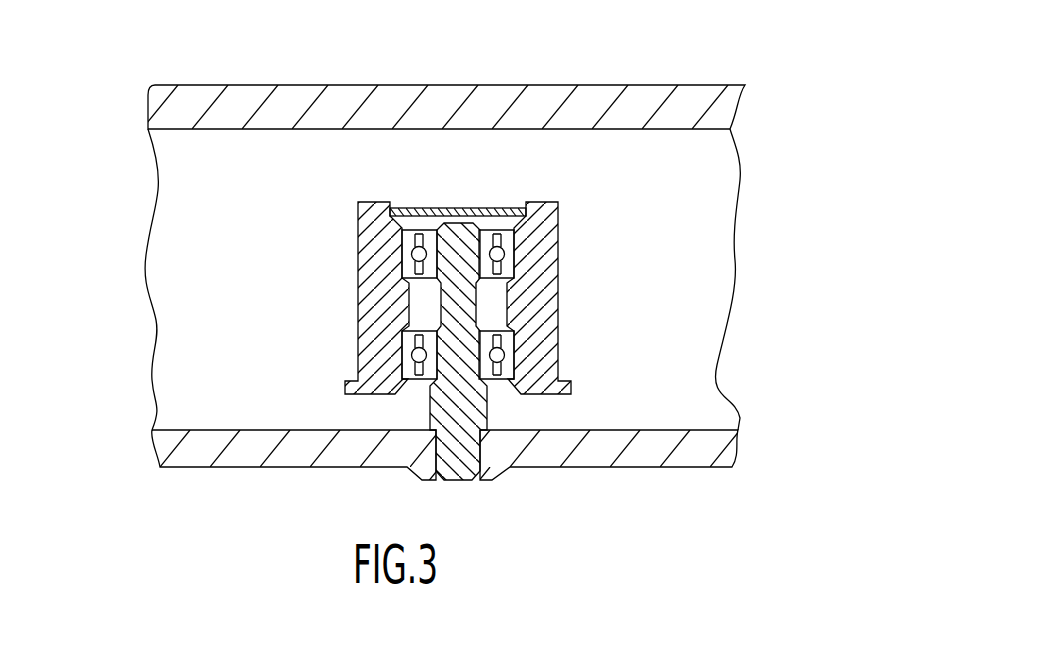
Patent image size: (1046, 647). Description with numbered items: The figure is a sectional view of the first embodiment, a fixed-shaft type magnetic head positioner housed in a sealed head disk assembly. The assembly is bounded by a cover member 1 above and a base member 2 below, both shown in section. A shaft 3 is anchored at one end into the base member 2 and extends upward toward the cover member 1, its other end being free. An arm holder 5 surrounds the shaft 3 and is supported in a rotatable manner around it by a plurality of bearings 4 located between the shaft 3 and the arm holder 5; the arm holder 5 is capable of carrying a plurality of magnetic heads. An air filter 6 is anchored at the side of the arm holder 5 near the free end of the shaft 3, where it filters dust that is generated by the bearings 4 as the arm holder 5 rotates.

The cover member 1 is at (210, 85).
The base member 2 is at (213, 430).
The shaft 3 is at (458, 480).
The bearings 4 is at (507, 385).
The arm holder 5 is at (358, 312).
The air filter 6 is at (481, 208).